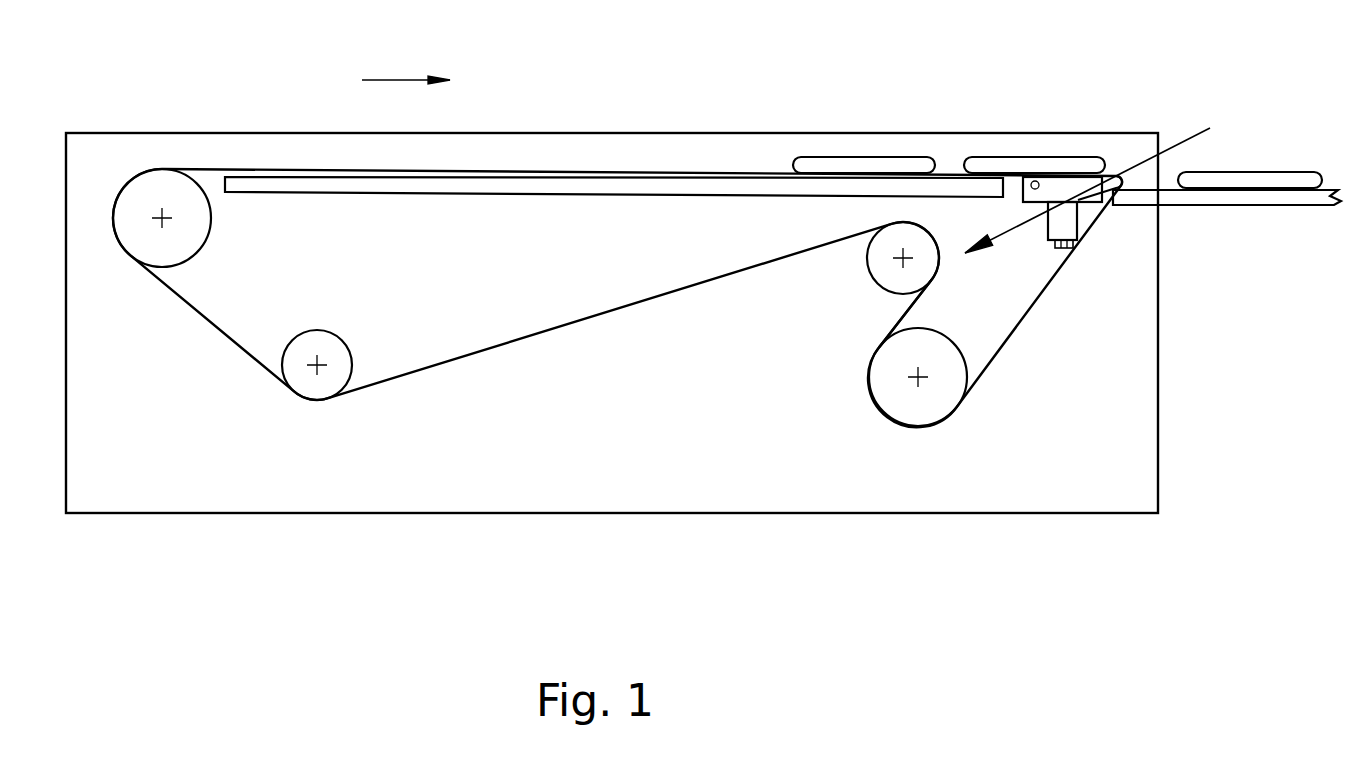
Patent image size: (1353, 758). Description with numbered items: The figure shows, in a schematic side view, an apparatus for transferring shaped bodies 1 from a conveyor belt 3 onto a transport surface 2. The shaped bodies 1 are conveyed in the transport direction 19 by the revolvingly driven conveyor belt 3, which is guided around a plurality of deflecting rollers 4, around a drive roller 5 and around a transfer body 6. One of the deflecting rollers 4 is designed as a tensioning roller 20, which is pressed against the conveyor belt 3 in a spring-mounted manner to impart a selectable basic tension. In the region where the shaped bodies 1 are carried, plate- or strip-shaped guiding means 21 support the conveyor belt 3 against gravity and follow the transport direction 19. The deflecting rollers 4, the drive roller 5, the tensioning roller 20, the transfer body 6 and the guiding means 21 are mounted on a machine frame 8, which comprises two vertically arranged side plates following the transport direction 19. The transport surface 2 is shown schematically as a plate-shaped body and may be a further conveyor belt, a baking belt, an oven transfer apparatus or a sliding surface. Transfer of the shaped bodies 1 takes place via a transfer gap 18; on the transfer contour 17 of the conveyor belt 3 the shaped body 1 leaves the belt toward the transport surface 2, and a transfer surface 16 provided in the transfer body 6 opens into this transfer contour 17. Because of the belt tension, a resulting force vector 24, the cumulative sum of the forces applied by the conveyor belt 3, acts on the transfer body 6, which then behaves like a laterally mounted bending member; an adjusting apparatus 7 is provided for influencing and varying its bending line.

The shaped bodies 1 is at (823, 163).
The transport surface 2 is at (1228, 197).
The conveyor belt 3 is at (205, 168).
The deflecting rollers 4 is at (143, 207).
The drive roller 5 is at (902, 390).
The transfer body 6 is at (1077, 185).
The adjusting apparatus 7 is at (1060, 226).
The machine frame 8 is at (153, 440).
The transfer surface 16 is at (1055, 173).
The transfer contour 17 is at (1125, 185).
The transfer gap 18 is at (1105, 179).
The transport direction 19 is at (385, 80).
The tensioning roller 20 is at (895, 275).
The guiding means 21 is at (527, 188).
The resulting force vector 24 is at (1013, 230).